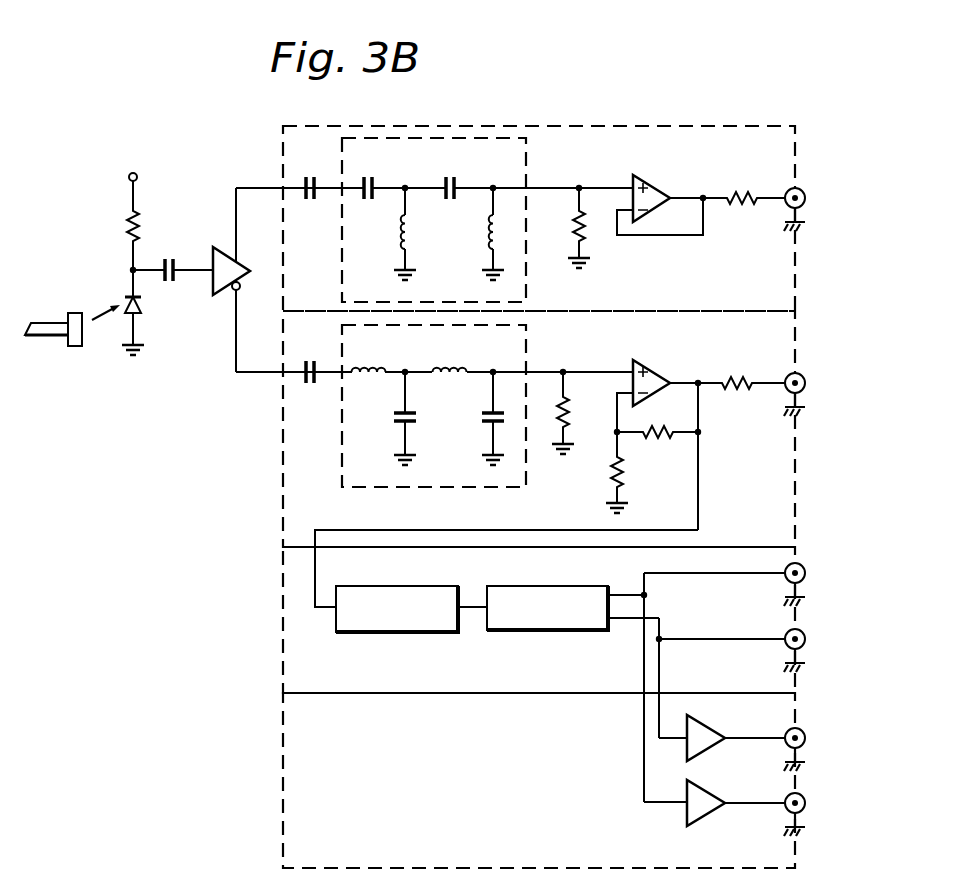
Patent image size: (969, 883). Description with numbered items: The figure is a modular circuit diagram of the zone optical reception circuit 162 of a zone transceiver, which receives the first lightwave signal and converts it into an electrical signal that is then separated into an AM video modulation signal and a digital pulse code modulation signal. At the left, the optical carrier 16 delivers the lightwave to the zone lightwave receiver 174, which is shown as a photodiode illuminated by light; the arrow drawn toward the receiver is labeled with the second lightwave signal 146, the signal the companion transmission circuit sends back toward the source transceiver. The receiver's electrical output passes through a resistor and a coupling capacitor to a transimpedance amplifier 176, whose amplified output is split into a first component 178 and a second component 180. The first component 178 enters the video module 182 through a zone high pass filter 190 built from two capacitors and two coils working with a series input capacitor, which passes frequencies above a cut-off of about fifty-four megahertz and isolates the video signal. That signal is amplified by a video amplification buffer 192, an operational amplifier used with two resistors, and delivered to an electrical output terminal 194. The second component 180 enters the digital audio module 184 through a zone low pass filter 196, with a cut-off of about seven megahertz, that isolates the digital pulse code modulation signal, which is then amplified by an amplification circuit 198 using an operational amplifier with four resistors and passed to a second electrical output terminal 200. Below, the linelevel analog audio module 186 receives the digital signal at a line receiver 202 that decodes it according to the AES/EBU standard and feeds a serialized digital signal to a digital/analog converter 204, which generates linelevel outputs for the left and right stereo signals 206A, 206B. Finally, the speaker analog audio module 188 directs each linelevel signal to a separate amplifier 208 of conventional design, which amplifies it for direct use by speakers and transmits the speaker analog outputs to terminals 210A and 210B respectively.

The zone optical reception circuit 162 is at (447, 474).
The optical carrier 16 is at (53, 349).
The second lightwave signal 146 is at (90, 304).
The zone lightwave receiver 174 is at (151, 314).
The transimpedance amplifier 176 is at (244, 280).
The first component 178 is at (267, 168).
The second component 180 is at (264, 389).
The video module 182 is at (534, 211).
The digital audio module 184 is at (540, 459).
The linelevel analog audio module 186 is at (548, 674).
The speaker analog audio module 188 is at (547, 774).
The zone high pass filter 190 is at (410, 220).
The video amplification buffer 192 is at (661, 198).
The electrical output terminal 194 is at (816, 198).
The zone low pass filter 196 is at (411, 406).
The amplification circuit 198 is at (644, 438).
The second electrical output terminal 200 is at (818, 386).
The line receiver 202 is at (397, 629).
The digital/analog (D/A) converter 204 is at (547, 629).
The left linelevel stereo signal 206A is at (827, 580).
The right linelevel stereo signal 206B is at (827, 646).
The amplifier 208 is at (714, 776).
The speaker analog output terminal 210A is at (826, 741).
The speaker analog output terminal 210B is at (826, 808).